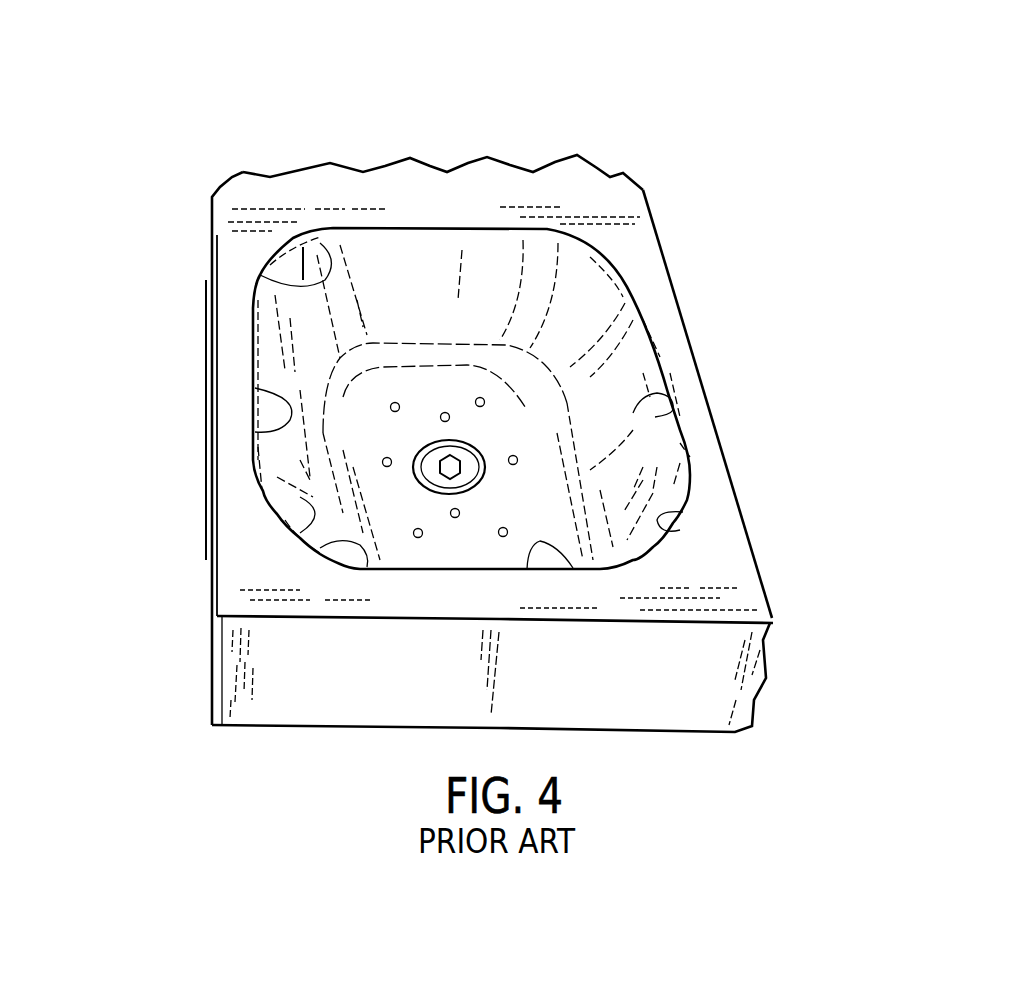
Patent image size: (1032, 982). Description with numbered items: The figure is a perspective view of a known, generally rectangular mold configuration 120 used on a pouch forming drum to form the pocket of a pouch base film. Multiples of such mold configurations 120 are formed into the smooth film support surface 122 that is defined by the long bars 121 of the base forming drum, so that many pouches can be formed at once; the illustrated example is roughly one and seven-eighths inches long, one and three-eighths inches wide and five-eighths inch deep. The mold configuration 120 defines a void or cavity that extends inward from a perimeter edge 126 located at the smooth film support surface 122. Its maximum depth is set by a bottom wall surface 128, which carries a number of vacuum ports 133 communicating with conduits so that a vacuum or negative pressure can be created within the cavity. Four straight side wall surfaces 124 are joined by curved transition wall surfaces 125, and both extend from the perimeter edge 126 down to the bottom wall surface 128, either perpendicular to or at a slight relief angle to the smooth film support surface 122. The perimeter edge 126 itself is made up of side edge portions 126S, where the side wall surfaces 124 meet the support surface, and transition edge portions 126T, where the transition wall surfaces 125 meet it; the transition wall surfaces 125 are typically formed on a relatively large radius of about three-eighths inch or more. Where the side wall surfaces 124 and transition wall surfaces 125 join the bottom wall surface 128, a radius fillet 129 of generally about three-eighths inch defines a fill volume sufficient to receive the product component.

The mold configuration 120 is at (718, 355).
The long bars 121 is at (285, 683).
The smooth film support surface 122 is at (282, 573).
The side wall surfaces 124 is at (430, 267).
The transition wall surfaces 125 is at (307, 236).
The perimeter edge 126 is at (250, 410).
The side edge portions 126S is at (430, 230).
The transition edge portions 126T is at (303, 245).
The bottom wall surface 128 is at (540, 523).
The radius fillet 129 is at (343, 395).
The vacuum ports 133 is at (518, 461).